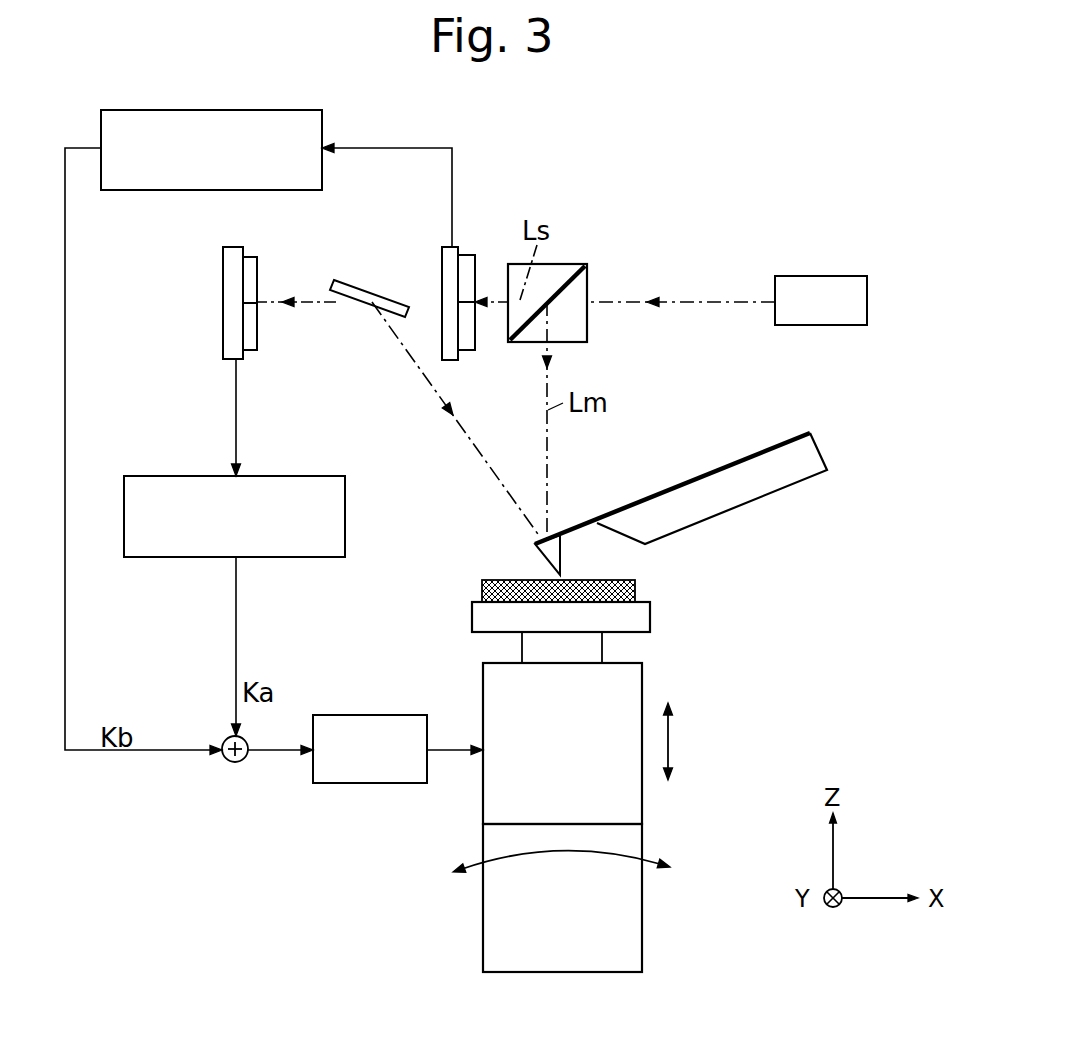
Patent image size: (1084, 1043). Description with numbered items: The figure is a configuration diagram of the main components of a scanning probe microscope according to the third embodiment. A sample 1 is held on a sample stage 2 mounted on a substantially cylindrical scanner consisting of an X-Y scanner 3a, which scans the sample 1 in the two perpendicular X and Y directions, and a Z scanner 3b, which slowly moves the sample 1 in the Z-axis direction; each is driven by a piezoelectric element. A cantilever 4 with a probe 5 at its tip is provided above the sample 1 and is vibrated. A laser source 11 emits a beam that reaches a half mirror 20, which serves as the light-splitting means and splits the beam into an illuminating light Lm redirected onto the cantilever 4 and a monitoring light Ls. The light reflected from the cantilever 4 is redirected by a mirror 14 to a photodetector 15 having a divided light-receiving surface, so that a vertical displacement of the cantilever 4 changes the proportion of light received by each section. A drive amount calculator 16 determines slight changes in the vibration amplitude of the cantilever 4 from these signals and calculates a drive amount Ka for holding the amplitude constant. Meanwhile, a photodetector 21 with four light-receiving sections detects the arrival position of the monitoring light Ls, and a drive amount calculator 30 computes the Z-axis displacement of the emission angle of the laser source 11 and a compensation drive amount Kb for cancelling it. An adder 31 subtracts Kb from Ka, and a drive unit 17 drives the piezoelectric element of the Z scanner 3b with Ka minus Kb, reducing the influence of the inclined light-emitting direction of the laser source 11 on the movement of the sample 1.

The sample 1 is at (636, 590).
The sample stage 2 is at (650, 620).
The X-Y scanner 3a is at (636, 923).
The Z scanner 3b is at (636, 793).
The cantilever 4 is at (577, 520).
The probe 5 is at (540, 556).
The laser source 11 is at (832, 275).
The mirror 14 is at (357, 288).
The photodetector 15 is at (257, 268).
The drive amount calculator 16 is at (347, 500).
The drive unit 17 is at (333, 785).
The half mirror 20 is at (587, 272).
The photodetector 21 is at (475, 262).
The drive amount calculator 30 is at (323, 122).
The adder 31 is at (224, 762).